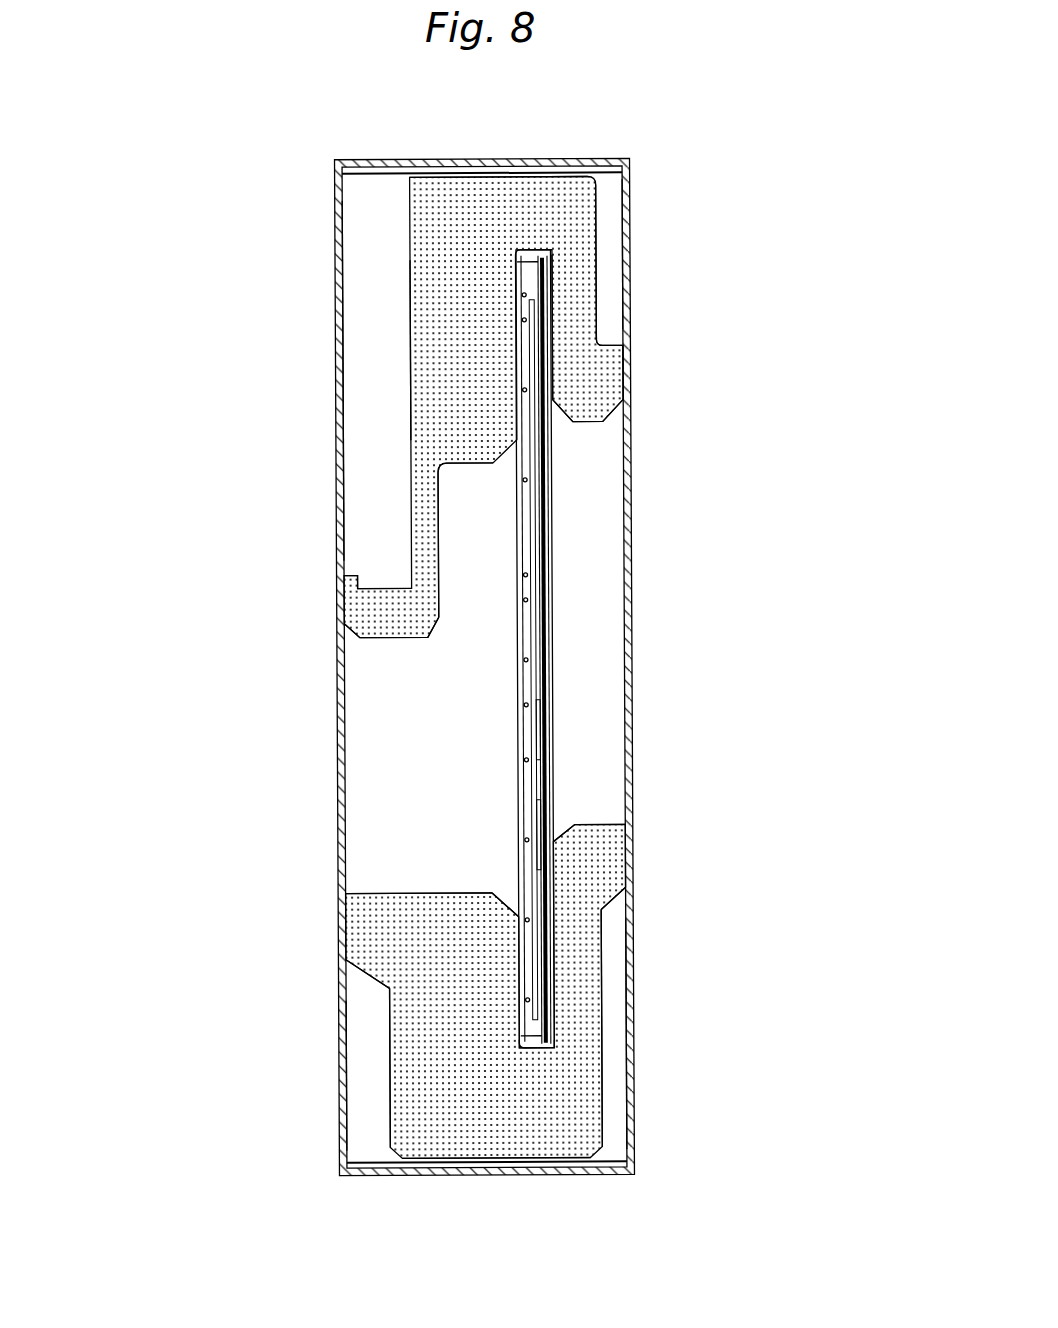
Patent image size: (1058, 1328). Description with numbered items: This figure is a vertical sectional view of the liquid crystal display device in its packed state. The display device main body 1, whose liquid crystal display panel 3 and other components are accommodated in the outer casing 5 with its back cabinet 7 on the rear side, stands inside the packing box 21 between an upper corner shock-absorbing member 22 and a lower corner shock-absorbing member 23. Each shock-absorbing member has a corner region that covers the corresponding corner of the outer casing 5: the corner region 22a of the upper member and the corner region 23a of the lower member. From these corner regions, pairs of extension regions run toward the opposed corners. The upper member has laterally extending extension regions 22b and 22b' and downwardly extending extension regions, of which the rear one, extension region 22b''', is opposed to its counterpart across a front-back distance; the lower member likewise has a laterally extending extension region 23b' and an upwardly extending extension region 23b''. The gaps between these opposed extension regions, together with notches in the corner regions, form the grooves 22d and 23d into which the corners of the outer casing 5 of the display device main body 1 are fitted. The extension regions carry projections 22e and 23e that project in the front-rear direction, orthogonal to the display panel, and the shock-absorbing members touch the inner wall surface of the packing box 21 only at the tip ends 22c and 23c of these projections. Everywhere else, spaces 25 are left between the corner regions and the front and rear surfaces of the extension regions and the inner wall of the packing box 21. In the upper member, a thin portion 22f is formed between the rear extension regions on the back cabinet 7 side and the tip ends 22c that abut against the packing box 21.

The display device main body 1 is at (549, 458).
The liquid crystal display panel 3 is at (540, 625).
The outer casing 5 is at (518, 670).
The back cabinet 7 is at (518, 775).
The packing box 21 is at (635, 735).
The upper corner shock-absorbing member 22 is at (453, 197).
The corner region 22a is at (582, 185).
The extension region 22b is at (654, 261).
The extension region 22b' is at (296, 350).
The extension region 22b''' is at (697, 353).
The tip end 22c is at (623, 388).
The groove 22d is at (562, 290).
The projection 22e is at (578, 318).
The thin portion 22f is at (422, 502).
The lower corner shock-absorbing member 23 is at (477, 1140).
The corner region 23a is at (563, 1150).
The extension region 23b' is at (284, 1067).
The extension region 23b'' is at (692, 1027).
The tip end 23c is at (628, 860).
The groove 23d is at (550, 1010).
The projection 23e is at (580, 873).
The space 25 is at (355, 250).